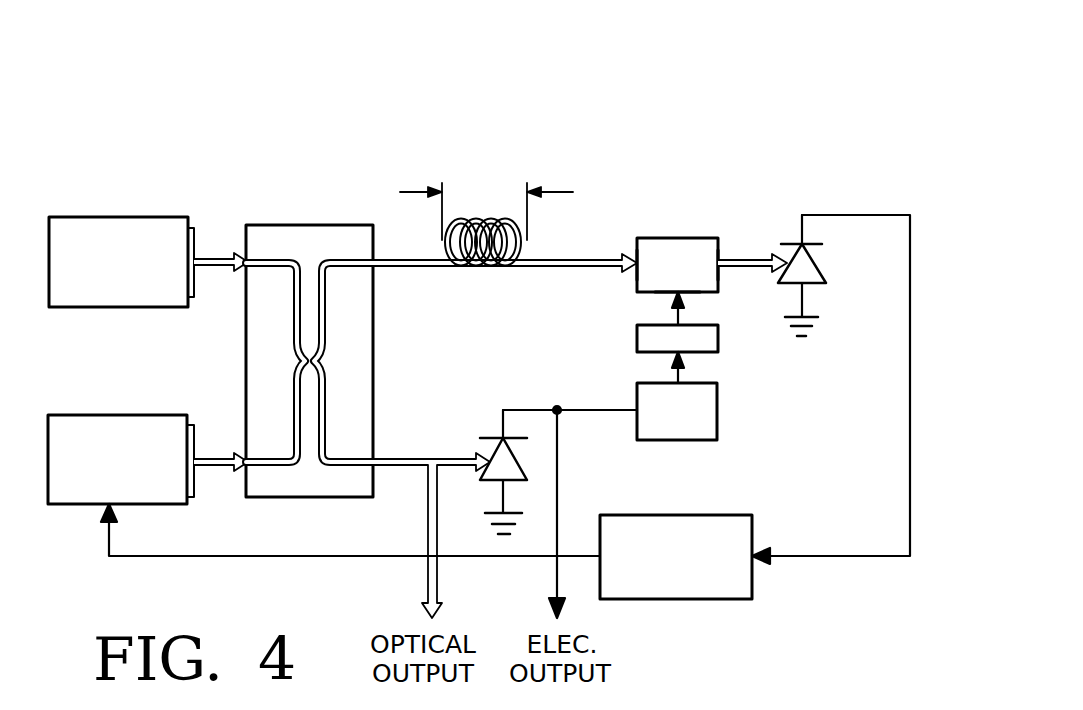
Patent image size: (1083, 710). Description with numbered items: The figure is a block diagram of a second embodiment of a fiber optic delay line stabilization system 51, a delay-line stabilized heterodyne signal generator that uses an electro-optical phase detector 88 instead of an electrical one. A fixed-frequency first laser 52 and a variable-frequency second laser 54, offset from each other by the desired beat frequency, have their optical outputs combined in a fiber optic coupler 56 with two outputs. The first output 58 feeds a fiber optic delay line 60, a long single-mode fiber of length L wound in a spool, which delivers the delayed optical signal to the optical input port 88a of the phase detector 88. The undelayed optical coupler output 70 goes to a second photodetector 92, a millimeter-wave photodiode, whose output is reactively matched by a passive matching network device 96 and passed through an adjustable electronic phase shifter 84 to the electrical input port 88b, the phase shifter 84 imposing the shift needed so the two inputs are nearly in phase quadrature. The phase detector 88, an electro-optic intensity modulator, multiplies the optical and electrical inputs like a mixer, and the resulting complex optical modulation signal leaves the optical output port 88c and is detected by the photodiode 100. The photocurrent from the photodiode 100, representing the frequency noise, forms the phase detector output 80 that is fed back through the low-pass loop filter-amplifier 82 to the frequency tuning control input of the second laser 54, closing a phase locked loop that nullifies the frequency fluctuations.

The system 51 is at (208, 188).
The first laser 52 is at (60, 222).
The second laser 54 is at (60, 420).
The fiber optic coupler 56 is at (349, 223).
The first output 58 is at (410, 268).
The fiber optic delay line 60 is at (500, 220).
The undelayed optical coupler output 70 is at (405, 457).
The phase detector output 80 is at (908, 476).
The loop filter-amplifier 82 is at (622, 520).
The adjustable electronic phase shifter 84 is at (718, 343).
The electro-optical phase detector 88 is at (676, 240).
The optical input port 88a is at (637, 262).
The electrical input port 88b is at (673, 292).
The optical output port 88c is at (718, 262).
The second photodetector 92 is at (490, 460).
The passive matching network device 96 is at (718, 412).
The photodiode 100 is at (812, 270).